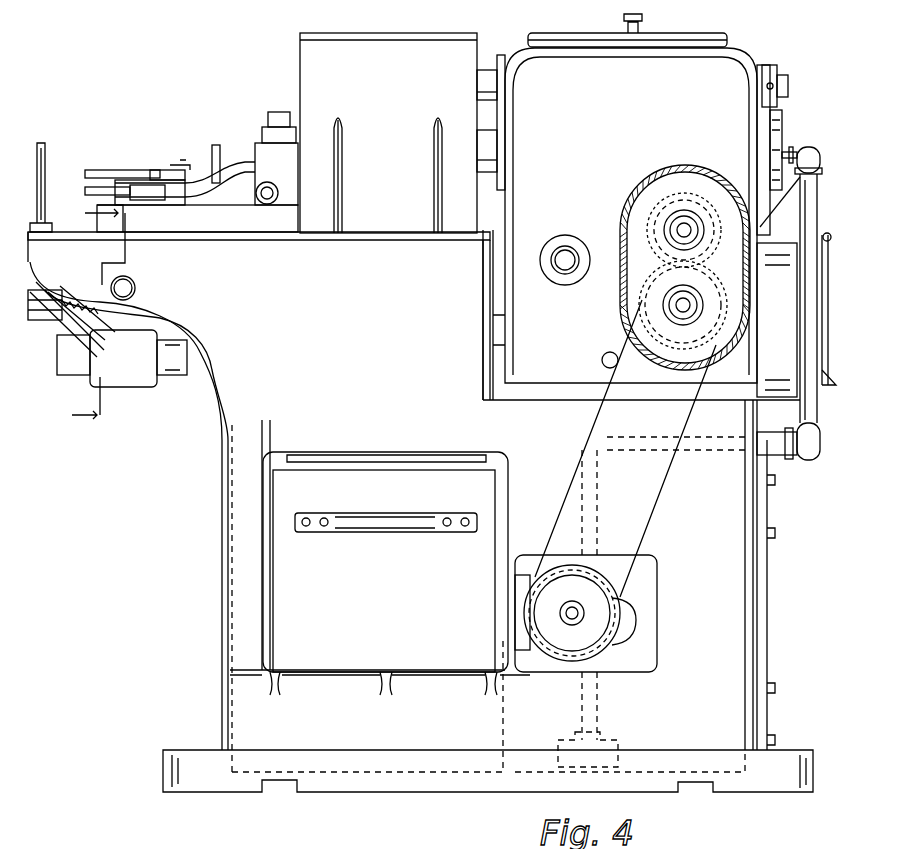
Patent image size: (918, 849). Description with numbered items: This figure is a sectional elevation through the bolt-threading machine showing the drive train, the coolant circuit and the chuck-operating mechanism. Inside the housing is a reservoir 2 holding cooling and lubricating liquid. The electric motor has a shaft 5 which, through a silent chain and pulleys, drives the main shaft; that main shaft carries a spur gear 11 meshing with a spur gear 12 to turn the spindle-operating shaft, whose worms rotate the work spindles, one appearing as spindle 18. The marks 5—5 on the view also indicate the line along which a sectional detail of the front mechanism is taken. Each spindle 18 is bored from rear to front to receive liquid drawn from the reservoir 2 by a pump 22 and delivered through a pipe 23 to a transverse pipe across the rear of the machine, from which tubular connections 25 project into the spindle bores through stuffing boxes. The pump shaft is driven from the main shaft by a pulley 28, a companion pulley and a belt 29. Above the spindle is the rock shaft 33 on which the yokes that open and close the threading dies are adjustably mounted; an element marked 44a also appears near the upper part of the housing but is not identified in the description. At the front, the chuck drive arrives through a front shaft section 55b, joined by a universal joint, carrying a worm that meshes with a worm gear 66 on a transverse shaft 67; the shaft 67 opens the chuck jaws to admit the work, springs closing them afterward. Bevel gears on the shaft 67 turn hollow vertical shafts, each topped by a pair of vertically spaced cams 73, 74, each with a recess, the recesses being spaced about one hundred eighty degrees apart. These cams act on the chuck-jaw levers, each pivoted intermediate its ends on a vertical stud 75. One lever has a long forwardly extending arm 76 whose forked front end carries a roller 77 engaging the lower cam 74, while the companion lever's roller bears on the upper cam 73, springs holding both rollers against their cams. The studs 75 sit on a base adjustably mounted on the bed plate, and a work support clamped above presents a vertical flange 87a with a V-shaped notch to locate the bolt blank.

The reservoir 2 is at (665, 700).
The shaft 5 is at (92, 314).
The spur gear 11 is at (665, 268).
The spur gear 12 is at (700, 200).
The spindle 18 is at (492, 148).
The pump 22 is at (636, 620).
The pipe 23 is at (800, 292).
The tubular connections 25 is at (789, 150).
The pulley 28 is at (608, 600).
The belt 29 is at (668, 470).
The rock shaft 33 is at (488, 70).
The bolt 44a is at (778, 72).
The front section 55b is at (176, 368).
The worm gear 66 is at (82, 300).
The shaft 67 is at (136, 289).
The cam 73 is at (110, 170).
The cam 74 is at (84, 190).
The vertical stud 75 is at (278, 110).
The arm 76 is at (206, 162).
The roller 77 is at (147, 228).
The vertical flange 87a is at (196, 158).